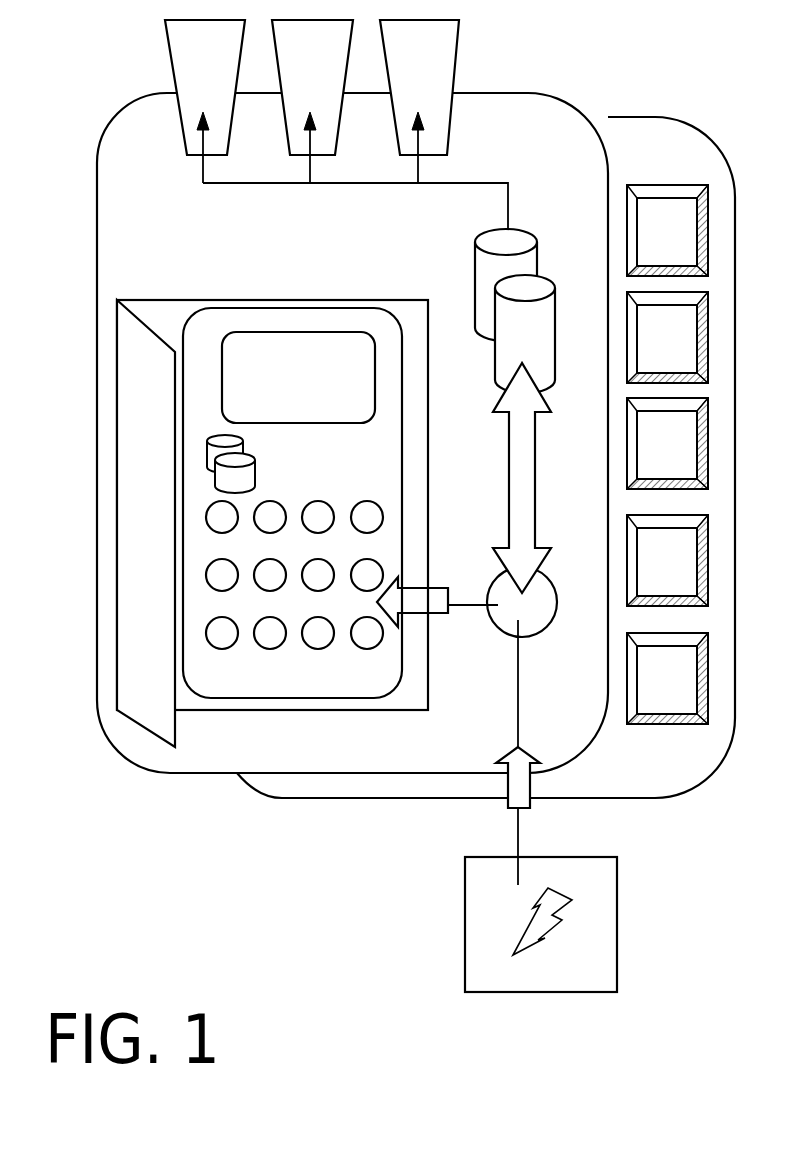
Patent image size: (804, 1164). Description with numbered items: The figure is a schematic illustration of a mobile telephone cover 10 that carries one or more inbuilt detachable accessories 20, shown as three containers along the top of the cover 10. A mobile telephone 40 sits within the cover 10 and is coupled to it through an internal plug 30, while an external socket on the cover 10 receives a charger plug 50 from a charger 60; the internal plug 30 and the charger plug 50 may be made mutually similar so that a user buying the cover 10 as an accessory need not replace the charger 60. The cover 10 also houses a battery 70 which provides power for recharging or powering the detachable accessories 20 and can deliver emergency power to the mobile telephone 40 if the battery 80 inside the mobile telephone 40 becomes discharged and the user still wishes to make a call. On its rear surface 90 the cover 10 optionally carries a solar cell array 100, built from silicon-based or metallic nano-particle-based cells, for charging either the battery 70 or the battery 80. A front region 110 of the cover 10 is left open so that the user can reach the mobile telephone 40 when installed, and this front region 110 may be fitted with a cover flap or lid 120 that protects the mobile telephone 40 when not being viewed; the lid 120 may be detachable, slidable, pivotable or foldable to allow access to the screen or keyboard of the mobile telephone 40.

The mobile telephone cover 10 is at (530, 60).
The detachable accessories 20 is at (190, 76).
The internal plug 30 is at (412, 605).
The mobile telephone 40 is at (305, 474).
The charger plug 50 is at (523, 785).
The charger 60 is at (558, 971).
The battery 70 is at (509, 344).
The battery 80 is at (230, 477).
The rear surface 90 is at (647, 131).
The solar cell array 100 is at (690, 243).
The front region 110 is at (167, 315).
The cover flap or lid 120 is at (147, 407).